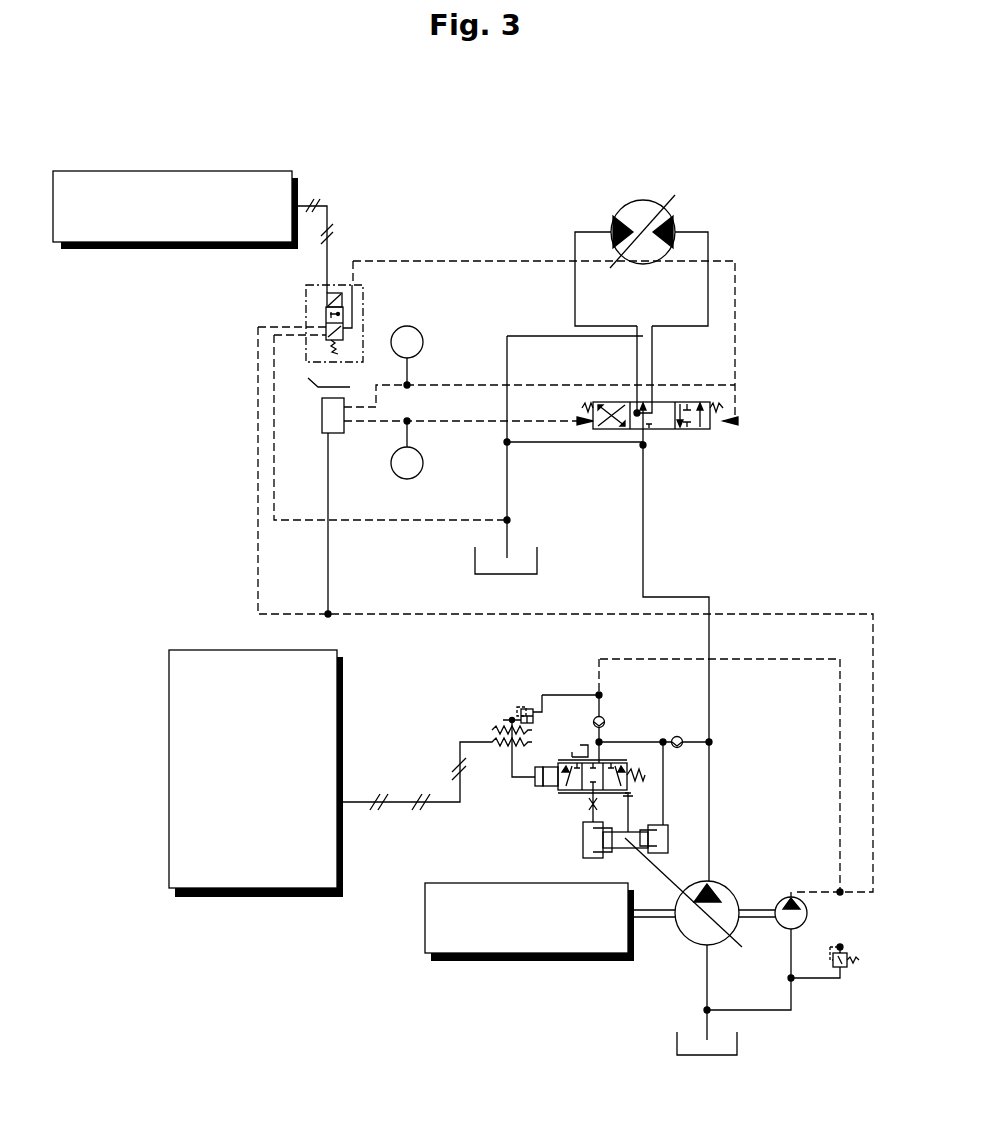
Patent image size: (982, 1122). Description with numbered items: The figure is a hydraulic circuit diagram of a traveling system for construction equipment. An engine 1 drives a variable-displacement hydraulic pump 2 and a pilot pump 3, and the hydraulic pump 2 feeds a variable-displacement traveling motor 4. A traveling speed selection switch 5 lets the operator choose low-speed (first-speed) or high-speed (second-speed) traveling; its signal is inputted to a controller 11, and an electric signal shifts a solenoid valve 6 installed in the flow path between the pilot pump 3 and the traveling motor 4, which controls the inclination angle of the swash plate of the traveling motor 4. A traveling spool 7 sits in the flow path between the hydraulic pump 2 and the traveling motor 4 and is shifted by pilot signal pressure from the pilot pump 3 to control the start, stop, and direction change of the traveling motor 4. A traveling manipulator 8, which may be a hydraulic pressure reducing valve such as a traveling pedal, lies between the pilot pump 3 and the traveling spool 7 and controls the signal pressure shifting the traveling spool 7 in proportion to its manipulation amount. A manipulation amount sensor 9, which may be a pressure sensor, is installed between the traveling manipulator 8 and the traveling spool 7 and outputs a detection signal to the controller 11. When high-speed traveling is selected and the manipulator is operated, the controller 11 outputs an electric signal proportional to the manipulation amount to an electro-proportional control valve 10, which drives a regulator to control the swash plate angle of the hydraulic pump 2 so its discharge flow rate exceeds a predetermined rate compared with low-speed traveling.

The engine 1 is at (562, 961).
The variable-displacement hydraulic pump 2 is at (723, 882).
The pilot pump 3 is at (807, 913).
The variable-displacement traveling motor 4 is at (672, 212).
The traveling speed selection switch 5 is at (198, 171).
The solenoid valve 6 is at (365, 298).
The traveling spool 7 is at (703, 429).
The traveling manipulator 8 is at (321, 418).
The manipulation amount sensor 9 is at (423, 340).
The electro-proportional control valve 10 is at (511, 700).
The controller 11 is at (303, 897).